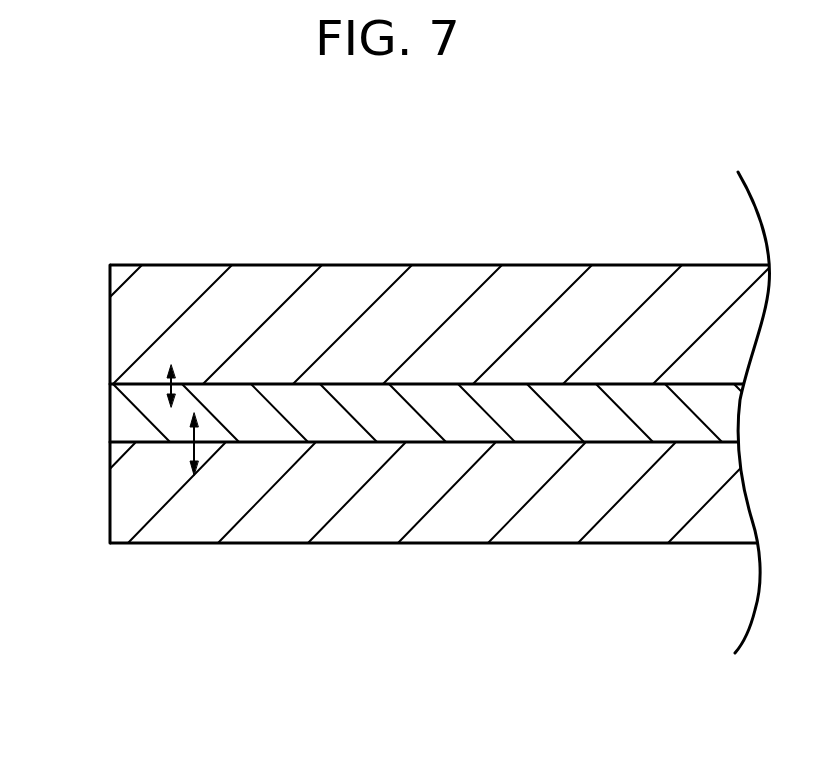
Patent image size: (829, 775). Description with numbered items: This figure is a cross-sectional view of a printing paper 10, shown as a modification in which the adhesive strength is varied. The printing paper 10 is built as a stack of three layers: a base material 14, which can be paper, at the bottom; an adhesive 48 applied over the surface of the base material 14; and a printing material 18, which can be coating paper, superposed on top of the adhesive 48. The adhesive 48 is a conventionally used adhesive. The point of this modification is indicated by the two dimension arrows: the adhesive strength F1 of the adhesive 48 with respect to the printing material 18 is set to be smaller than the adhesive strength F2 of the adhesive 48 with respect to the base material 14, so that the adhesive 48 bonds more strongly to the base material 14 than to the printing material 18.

The printing paper 10 is at (588, 219).
The printing material 18 is at (168, 285).
The adhesive 48 is at (108, 415).
The base material 14 is at (453, 530).
The adhesive strength of the adhesive with respect to the printing material F1 is at (168, 372).
The adhesive strength of the adhesive with respect to the base material F2 is at (190, 450).